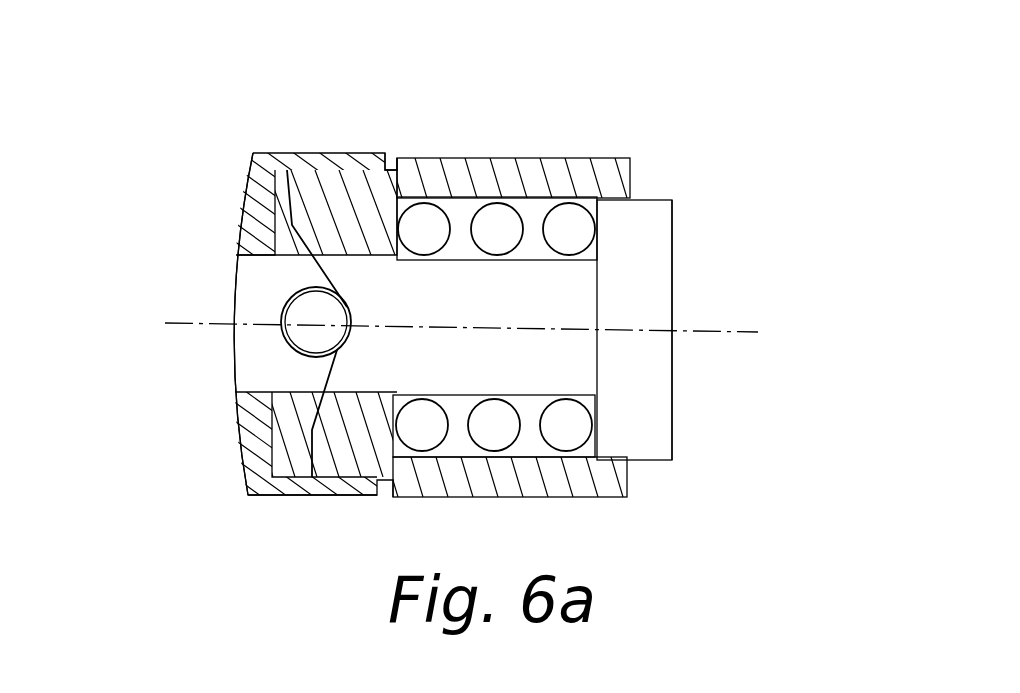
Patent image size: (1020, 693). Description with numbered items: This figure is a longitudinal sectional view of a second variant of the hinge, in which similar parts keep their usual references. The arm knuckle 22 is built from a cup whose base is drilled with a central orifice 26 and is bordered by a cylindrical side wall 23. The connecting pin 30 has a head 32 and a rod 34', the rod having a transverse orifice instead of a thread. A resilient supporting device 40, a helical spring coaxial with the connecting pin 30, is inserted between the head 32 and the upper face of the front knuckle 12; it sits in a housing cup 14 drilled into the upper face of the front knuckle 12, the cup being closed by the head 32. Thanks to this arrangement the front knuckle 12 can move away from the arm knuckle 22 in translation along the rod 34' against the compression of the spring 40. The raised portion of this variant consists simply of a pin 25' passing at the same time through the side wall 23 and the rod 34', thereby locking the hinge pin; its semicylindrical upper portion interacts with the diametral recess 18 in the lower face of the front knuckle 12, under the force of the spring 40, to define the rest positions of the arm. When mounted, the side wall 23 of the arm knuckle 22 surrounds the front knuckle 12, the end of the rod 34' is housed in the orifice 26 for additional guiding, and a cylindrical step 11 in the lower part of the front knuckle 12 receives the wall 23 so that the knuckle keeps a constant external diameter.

The cylindrical step 11 is at (390, 158).
The front knuckle 12 is at (647, 487).
The housing cup 14 is at (442, 165).
The diametral recess 18 is at (327, 372).
The arm knuckle 22 is at (220, 128).
The cylindrical side wall 23 is at (308, 500).
The pin 25' is at (214, 303).
The central orifice 26 is at (238, 253).
The connecting pin 30 is at (708, 249).
The head 32 is at (638, 240).
The rod 34' is at (500, 352).
The resilient supporting device 40 is at (490, 230).